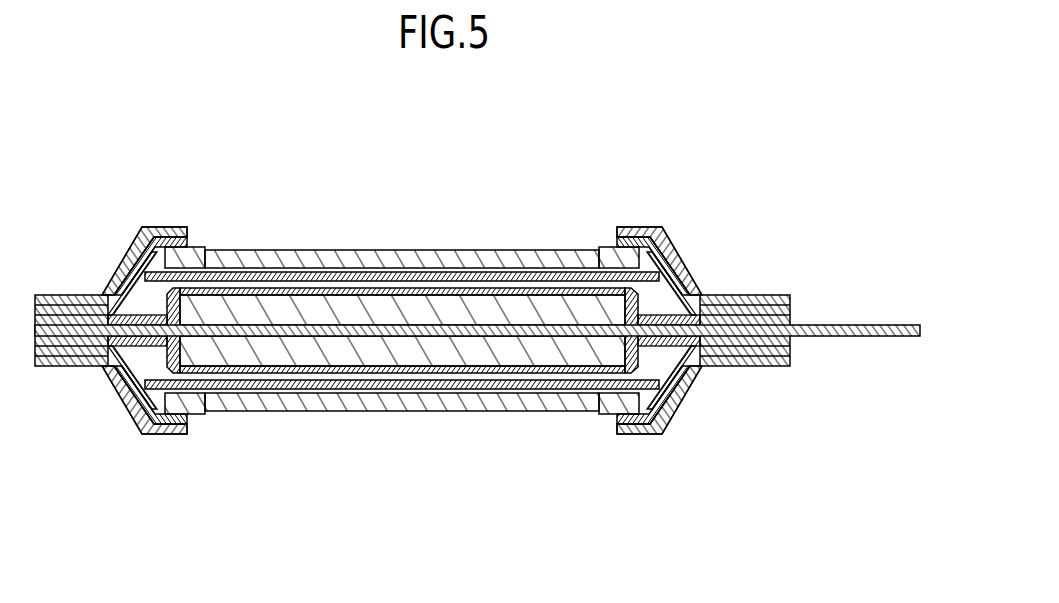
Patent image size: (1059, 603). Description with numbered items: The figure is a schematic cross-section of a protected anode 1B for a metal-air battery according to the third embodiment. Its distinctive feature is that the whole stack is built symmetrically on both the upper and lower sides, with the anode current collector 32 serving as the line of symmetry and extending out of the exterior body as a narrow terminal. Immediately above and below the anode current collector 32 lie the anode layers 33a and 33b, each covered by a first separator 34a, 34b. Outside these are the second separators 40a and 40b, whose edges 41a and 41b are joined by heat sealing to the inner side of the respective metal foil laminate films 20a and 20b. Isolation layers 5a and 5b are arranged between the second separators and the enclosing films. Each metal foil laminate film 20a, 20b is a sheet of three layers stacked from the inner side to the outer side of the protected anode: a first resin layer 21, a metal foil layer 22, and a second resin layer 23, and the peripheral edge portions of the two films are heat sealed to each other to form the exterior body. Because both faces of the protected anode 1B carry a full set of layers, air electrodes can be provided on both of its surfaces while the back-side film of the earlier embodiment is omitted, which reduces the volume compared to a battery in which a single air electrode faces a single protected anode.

The protected anode 1B is at (770, 122).
The metal foil laminate film 20a is at (243, 125).
The metal foil laminate film 20b is at (217, 525).
The first resin layer 21 is at (212, 245).
The metal foil layer 22 is at (177, 228).
The second resin layer 23 is at (115, 240).
The isolation layer 5a is at (278, 262).
The isolation layer 5b is at (260, 403).
The second separator 40a is at (488, 278).
The second separator 40b is at (460, 386).
The first separator 34a is at (560, 292).
The first separator 34b is at (582, 368).
The anode layer 33a is at (352, 313).
The anode layer 33b is at (318, 353).
The anode current collector 32 is at (858, 325).
The edge of second separator 41a is at (130, 253).
The edge of second separator 41b is at (128, 396).